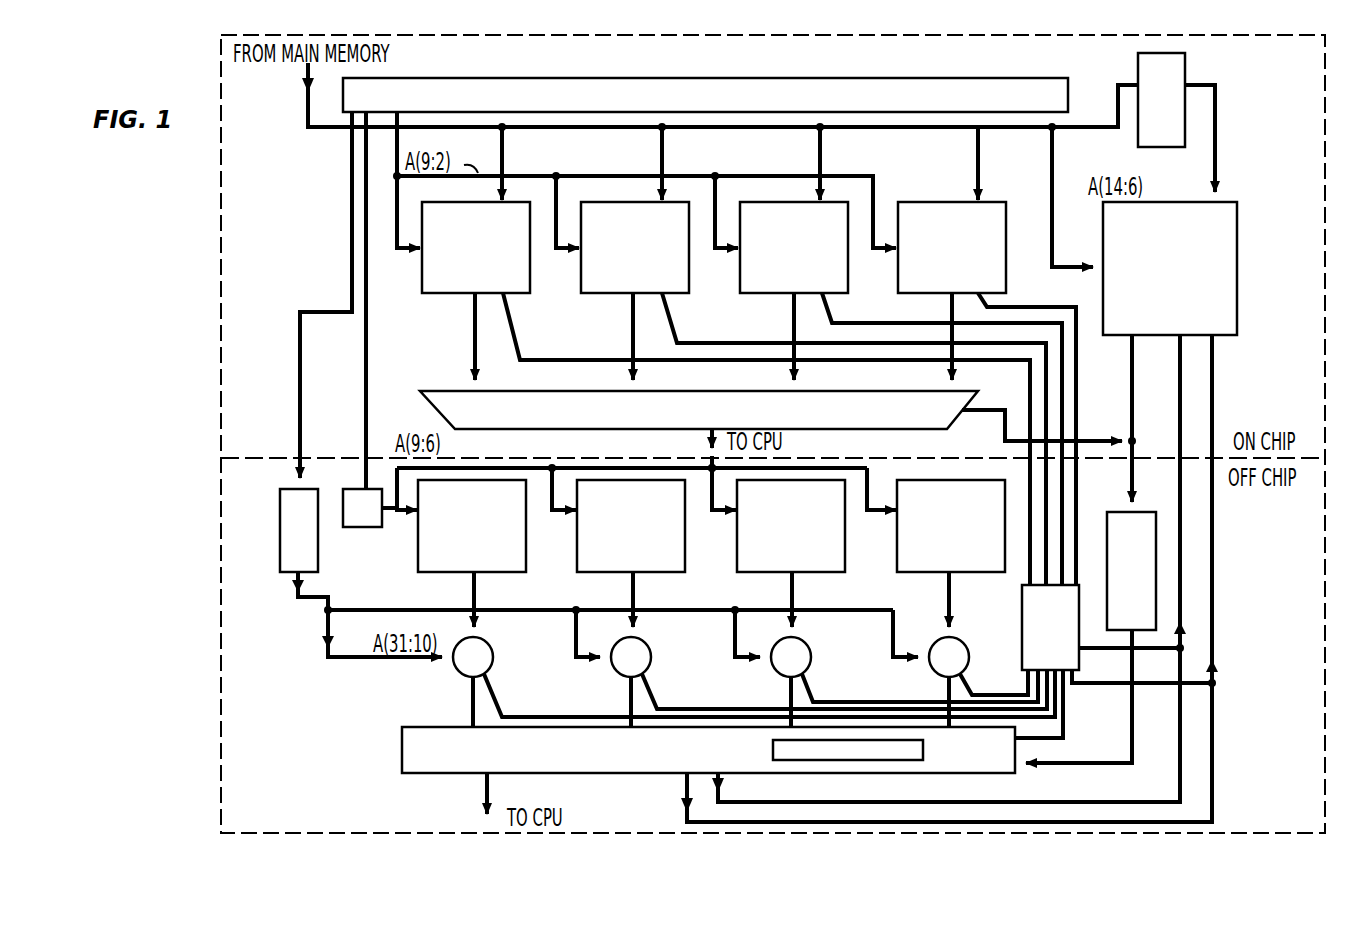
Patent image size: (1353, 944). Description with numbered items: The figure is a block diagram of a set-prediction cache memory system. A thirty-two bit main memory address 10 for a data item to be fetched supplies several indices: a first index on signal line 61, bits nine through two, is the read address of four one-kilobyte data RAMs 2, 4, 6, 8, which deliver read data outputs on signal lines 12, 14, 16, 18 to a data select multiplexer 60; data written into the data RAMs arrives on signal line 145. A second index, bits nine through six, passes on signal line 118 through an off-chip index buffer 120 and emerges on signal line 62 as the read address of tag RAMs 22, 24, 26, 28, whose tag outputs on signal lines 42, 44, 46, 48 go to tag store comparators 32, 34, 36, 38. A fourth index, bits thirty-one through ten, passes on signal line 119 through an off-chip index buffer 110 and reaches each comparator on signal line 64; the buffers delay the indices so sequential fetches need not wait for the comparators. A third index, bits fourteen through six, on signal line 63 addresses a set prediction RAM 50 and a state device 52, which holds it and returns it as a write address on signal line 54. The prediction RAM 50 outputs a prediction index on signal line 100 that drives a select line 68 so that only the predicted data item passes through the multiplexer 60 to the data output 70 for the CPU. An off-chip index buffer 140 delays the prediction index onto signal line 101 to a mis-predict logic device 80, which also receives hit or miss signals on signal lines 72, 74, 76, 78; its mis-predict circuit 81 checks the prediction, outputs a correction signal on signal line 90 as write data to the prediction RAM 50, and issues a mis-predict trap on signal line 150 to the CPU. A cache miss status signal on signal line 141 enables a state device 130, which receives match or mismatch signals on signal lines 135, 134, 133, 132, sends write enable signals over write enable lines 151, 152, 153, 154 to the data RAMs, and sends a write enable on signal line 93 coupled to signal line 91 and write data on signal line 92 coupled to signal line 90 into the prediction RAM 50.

The main memory address 10 is at (917, 78).
The data line from main memory 145 is at (308, 118).
The signal line 61 is at (397, 172).
The signal line 62 is at (352, 273).
The data RAM 2 is at (476, 247).
The data RAM 4 is at (635, 247).
The data RAM 6 is at (794, 247).
The data RAM 8 is at (952, 247).
The write enable line 151 is at (514, 330).
The write enable line 152 is at (670, 328).
The write enable line 153 is at (832, 318).
The write enable line 154 is at (990, 312).
The state device 52 is at (1161, 100).
The signal line 54 is at (1215, 162).
The signal line 63 is at (1082, 128).
The set prediction RAM 50 is at (1170, 269).
The signal line 12 is at (475, 370).
The signal line 14 is at (633, 374).
The signal line 16 is at (794, 374).
The signal line 18 is at (952, 374).
The data select multiplexer 60 is at (699, 410).
The select line 68 is at (975, 406).
The data output 70 is at (710, 438).
The signal line 119 is at (300, 412).
The signal line 118 is at (362, 390).
The off-chip index buffer 110 is at (292, 576).
The off-chip index buffer 120 is at (360, 527).
The tag RAM 22 is at (472, 526).
The tag RAM 24 is at (631, 526).
The tag RAM 26 is at (791, 526).
The tag RAM 28 is at (951, 526).
The signal line 42 is at (474, 594).
The signal line 44 is at (633, 594).
The signal line 46 is at (792, 594).
The signal line 48 is at (949, 594).
The signal line 64 is at (328, 636).
The tag store comparator 32 is at (473, 657).
The tag store comparator 34 is at (631, 657).
The tag store comparator 36 is at (791, 657).
The tag store comparator 38 is at (949, 657).
The signal line 72 is at (473, 698).
The signal line 74 is at (631, 698).
The signal line 76 is at (791, 698).
The signal line 78 is at (949, 698).
The signal line 135 is at (496, 692).
The signal line 134 is at (655, 690).
The signal line 133 is at (810, 690).
The signal line 132 is at (966, 684).
The mis-predict logic device 80 is at (402, 750).
The mis-predict circuit 81 is at (923, 748).
The signal line 150 is at (487, 792).
The signal line 91 is at (1212, 398).
The signal line 90 is at (1182, 510).
The write data signal line 92 is at (1183, 641).
The write enable signal line 93 is at (1180, 686).
The signal line 100 is at (1132, 405).
The signal line 101 is at (1132, 700).
The state device 130 is at (1050, 627).
The off-chip index buffer 140 is at (1131, 571).
The signal line 141 is at (1067, 698).